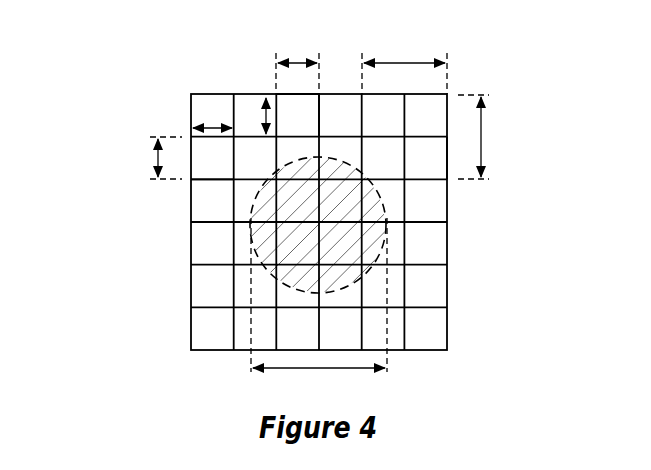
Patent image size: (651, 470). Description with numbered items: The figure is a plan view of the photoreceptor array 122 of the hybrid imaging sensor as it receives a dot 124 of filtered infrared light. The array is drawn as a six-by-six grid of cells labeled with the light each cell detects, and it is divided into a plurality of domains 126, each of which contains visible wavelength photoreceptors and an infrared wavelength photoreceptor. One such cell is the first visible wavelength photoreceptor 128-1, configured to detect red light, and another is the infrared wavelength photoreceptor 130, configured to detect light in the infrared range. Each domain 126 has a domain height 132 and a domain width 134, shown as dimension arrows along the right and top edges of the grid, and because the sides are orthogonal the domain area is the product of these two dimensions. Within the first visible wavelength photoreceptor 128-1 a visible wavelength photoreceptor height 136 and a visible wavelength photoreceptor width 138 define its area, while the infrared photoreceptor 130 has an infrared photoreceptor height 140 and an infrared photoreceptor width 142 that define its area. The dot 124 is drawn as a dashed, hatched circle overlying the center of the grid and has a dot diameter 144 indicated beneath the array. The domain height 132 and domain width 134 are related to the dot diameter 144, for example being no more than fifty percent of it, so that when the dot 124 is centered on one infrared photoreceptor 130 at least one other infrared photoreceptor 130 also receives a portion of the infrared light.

The photoreceptor array 122 is at (91, 95).
The dot 124 is at (386, 246).
The domain 126 is at (460, 188).
The first visible wavelength photoreceptor 128-1 is at (312, 103).
The infrared wavelength photoreceptor 130 is at (197, 176).
The domain height 132 is at (483, 125).
The domain width 134 is at (409, 58).
The visible wavelength photoreceptor height 136 is at (267, 94).
The visible wavelength photoreceptor width 138 is at (300, 58).
The infrared photoreceptor height 140 is at (157, 157).
The infrared photoreceptor width 142 is at (191, 128).
The dot diameter 144 is at (320, 368).